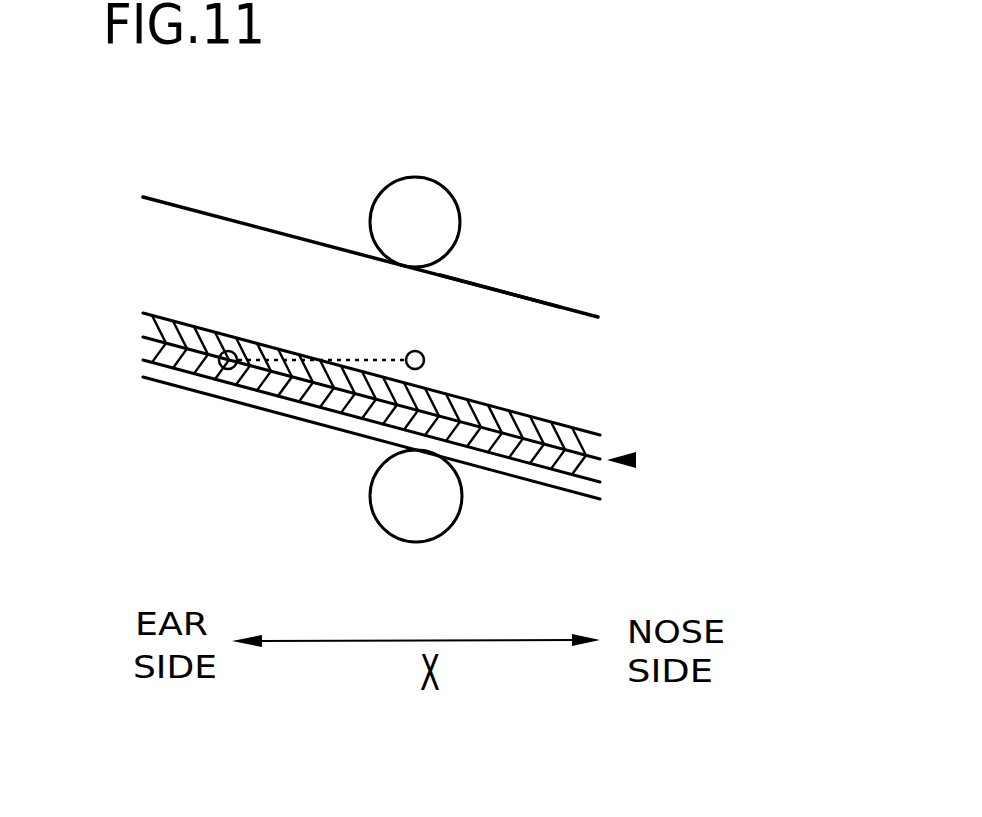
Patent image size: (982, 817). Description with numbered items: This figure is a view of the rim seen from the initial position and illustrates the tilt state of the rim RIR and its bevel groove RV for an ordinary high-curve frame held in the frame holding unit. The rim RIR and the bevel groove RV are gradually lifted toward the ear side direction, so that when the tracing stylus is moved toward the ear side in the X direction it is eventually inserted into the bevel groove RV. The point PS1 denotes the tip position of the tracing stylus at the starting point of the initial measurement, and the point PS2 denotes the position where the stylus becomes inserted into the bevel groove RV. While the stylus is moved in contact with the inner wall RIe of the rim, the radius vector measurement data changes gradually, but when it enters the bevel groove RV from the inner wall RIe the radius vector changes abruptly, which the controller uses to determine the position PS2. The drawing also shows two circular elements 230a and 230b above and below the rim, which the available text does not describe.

The rim RIR is at (245, 225).
The upper roller 230a is at (410, 187).
The inner wall of the rim RIe is at (472, 310).
The tip position of the tracing stylus at the starting point of the initial measurem PS1 is at (424, 360).
The position where the tracing stylus is inserted into the bevel groove PS2 is at (220, 366).
The bevel groove RV is at (634, 461).
The lower roller 230b is at (421, 541).